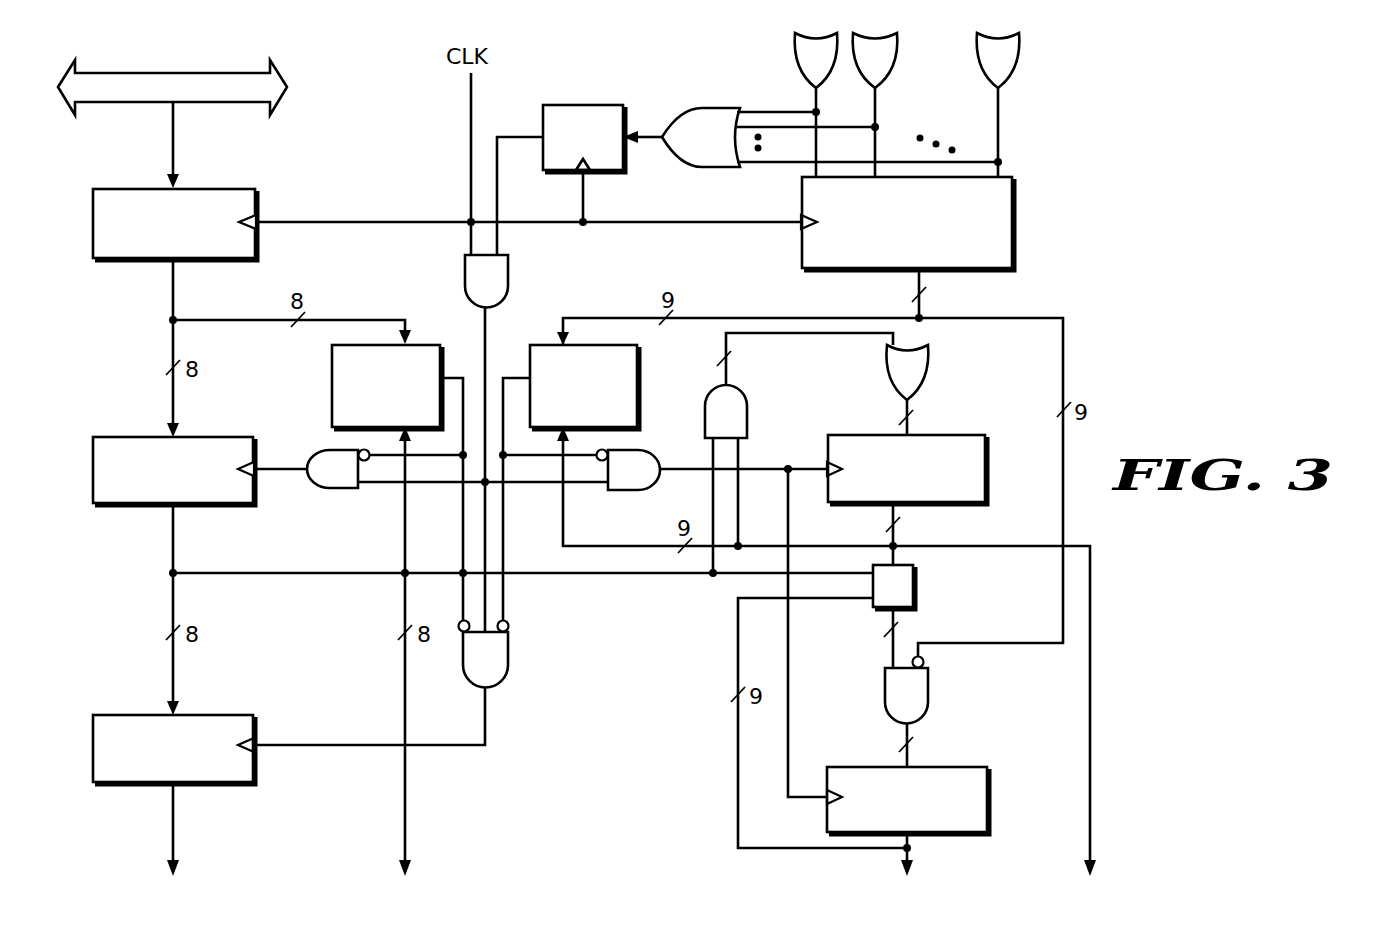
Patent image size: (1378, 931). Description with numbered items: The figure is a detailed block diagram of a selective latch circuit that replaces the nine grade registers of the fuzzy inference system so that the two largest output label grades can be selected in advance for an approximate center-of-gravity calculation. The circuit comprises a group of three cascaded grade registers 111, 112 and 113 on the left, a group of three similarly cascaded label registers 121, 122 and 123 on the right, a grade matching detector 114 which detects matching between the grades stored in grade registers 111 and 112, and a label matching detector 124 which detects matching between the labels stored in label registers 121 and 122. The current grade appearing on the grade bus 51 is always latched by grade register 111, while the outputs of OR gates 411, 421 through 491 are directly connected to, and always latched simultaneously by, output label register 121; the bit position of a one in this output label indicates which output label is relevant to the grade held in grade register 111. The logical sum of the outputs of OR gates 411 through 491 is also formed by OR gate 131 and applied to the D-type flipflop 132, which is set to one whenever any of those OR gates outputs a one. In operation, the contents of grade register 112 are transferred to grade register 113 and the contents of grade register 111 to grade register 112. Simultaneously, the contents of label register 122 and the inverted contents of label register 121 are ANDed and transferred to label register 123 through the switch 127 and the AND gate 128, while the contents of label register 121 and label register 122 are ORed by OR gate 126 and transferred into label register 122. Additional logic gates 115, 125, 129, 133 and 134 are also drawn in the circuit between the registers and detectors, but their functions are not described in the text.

The grade bus 51 is at (170, 72).
The grade register 111 is at (239, 188).
The grade register 112 is at (239, 437).
The grade register 113 is at (239, 715).
The grade matching detector 114 is at (332, 373).
The AND gate 115 is at (338, 489).
The output label register 121 is at (1013, 230).
The label register 122 is at (986, 477).
The label register 123 is at (988, 805).
The label matching detector 124 is at (637, 372).
The AND gate 125 is at (628, 492).
The OR gate 126 is at (929, 372).
The switch 127 is at (914, 585).
The AND gate 128 is at (929, 697).
The AND gate 129 is at (748, 412).
The OR gate 131 is at (710, 108).
The D-type flipflop 132 is at (582, 105).
The AND gate 133 is at (509, 287).
The AND gate 134 is at (509, 661).
The OR gate 411 is at (796, 56).
The OR gate 421 is at (897, 60).
The OR gate 491 is at (1019, 58).